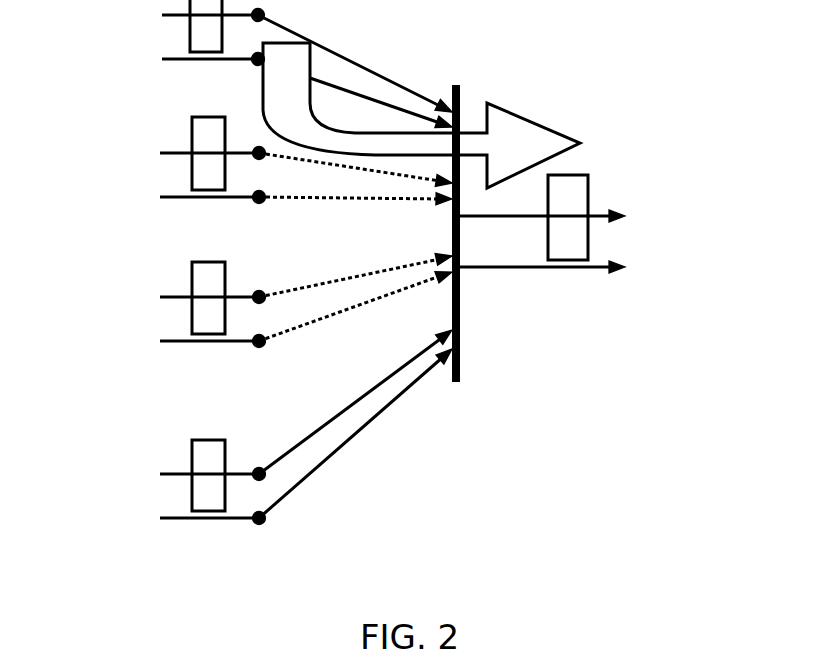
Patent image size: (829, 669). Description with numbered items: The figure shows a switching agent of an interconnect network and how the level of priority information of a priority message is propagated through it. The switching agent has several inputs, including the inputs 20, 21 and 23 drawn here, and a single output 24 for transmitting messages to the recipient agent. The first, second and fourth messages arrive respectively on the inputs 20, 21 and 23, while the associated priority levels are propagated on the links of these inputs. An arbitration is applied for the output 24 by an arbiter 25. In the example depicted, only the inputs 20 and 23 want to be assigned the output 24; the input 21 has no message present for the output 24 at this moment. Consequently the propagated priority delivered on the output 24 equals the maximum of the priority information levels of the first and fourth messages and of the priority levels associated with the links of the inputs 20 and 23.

The input 20 is at (140, 36).
The input 21 is at (140, 176).
The input 23 is at (140, 498).
The output 24 is at (648, 238).
The arbiter 25 is at (458, 350).